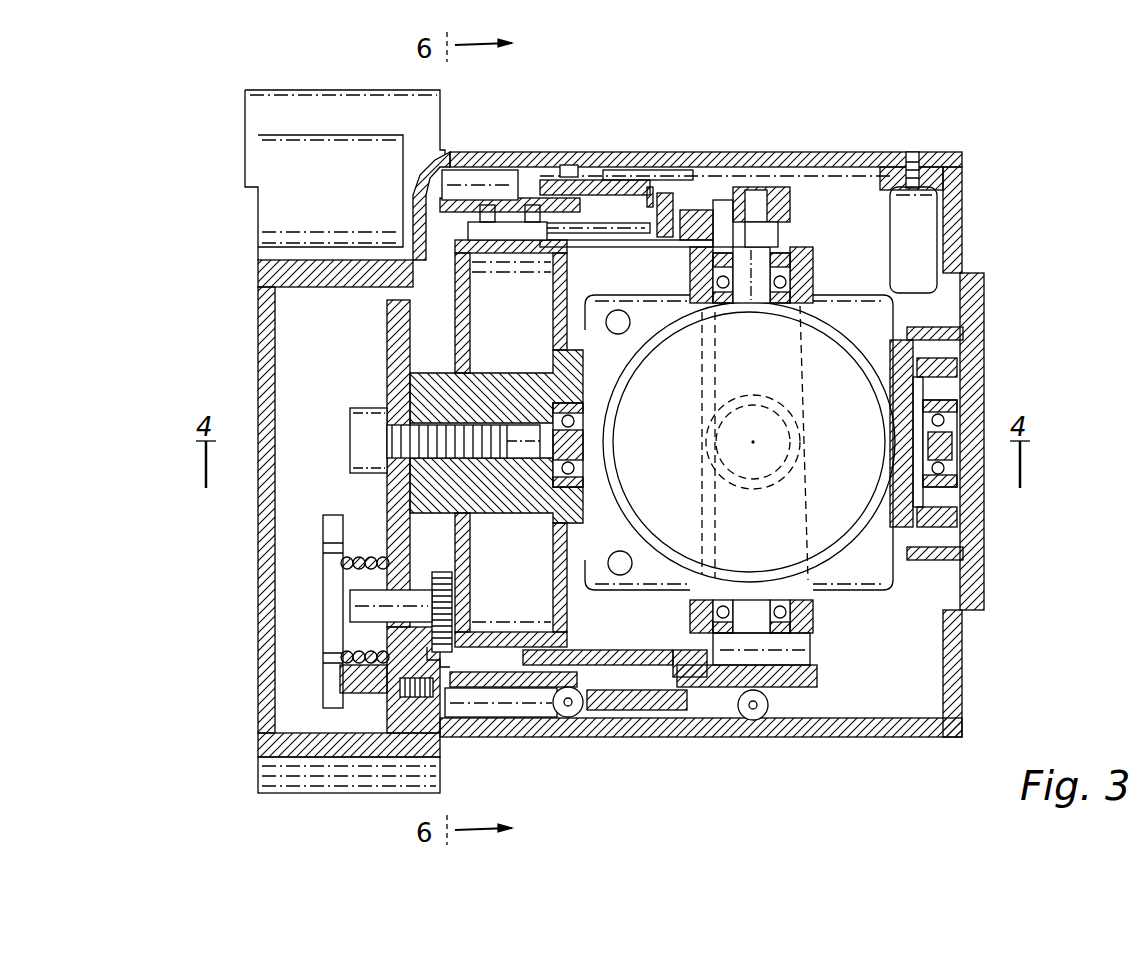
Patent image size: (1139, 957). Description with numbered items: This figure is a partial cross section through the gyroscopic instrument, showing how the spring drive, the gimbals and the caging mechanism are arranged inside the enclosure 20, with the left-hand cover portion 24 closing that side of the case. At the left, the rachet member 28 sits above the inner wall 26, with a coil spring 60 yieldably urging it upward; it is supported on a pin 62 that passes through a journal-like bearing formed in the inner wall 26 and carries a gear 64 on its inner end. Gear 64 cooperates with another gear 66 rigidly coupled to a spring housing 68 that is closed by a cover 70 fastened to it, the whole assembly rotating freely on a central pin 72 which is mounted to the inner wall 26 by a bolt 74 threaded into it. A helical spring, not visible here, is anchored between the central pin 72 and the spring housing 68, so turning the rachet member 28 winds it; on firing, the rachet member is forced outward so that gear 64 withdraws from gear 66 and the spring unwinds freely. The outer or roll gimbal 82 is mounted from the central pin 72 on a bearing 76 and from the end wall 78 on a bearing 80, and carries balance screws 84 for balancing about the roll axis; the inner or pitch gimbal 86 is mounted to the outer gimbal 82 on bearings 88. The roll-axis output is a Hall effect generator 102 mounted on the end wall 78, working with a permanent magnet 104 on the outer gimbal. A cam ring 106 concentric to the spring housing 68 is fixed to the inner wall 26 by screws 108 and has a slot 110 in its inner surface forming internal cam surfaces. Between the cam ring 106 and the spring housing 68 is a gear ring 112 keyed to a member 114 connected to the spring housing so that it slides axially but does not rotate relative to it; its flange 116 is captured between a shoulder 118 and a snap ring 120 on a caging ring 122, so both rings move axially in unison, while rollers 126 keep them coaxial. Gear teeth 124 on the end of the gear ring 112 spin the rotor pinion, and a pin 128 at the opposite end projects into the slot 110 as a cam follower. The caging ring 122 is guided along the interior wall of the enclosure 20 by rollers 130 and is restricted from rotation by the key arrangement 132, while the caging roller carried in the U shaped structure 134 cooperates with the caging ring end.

The enclosure 20 is at (628, 740).
The cover 24 is at (262, 347).
The inner wall 26 is at (385, 510).
The rachet member 28 is at (318, 563).
The coil spring 60 is at (365, 665).
The pin 62 is at (358, 615).
The gear 64 is at (447, 650).
The gear 66 is at (393, 298).
The spring housing 68 is at (460, 280).
The cover 70 is at (556, 300).
The central pin 72 is at (498, 378).
The bolt 74 is at (350, 432).
The bearing 76 is at (560, 400).
The end wall 78 is at (958, 368).
The bearing 80 is at (953, 408).
The outer or roll gimbal 82 is at (813, 268).
The balance screws 84 is at (616, 320).
The inner or pitch gimbal 86 is at (765, 632).
The bearings 88 is at (785, 256).
The Hall effect generator 102 is at (962, 333).
The permanent magnet 104 is at (965, 362).
The cam ring 106 is at (520, 200).
The screws 108 is at (390, 700).
The slot 110 is at (497, 175).
The gear ring 112 is at (605, 235).
The member 114 is at (507, 224).
The flange 116 is at (650, 195).
The shoulder 118 is at (665, 200).
The snap ring 120 is at (640, 170).
The caging ring 122 is at (695, 215).
The gear teeth 124 is at (722, 205).
The rollers 126 is at (680, 248).
The pin 128 is at (542, 185).
The rollers 130 is at (568, 715).
The key arrangement 132 is at (568, 165).
The U shaped structure 134 is at (780, 177).